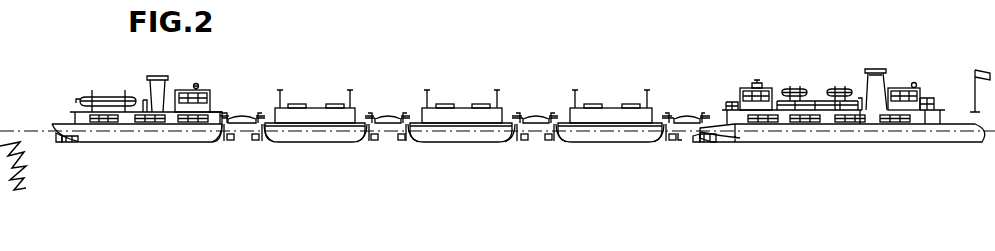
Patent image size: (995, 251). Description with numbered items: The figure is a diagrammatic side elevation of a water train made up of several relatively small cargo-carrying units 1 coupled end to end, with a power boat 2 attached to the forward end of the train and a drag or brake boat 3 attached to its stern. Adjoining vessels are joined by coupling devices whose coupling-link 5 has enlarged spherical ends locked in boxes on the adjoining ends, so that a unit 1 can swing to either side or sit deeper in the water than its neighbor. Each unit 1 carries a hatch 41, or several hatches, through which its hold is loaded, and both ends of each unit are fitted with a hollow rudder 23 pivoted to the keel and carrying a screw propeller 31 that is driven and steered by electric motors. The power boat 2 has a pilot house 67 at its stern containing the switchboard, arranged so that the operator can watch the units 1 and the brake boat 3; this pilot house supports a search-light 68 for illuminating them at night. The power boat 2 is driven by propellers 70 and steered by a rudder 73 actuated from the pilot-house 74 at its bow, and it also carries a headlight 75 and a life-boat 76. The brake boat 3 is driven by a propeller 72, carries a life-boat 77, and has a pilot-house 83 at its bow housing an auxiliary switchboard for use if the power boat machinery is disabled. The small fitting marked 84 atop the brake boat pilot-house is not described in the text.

The cargo-carrying unit 1 is at (320, 108).
The power boat 2 is at (878, 72).
The brake boat 3 is at (211, 112).
The coupling-link 5 is at (240, 118).
The rudder 23 is at (228, 137).
The screw propeller 31 is at (256, 140).
The hatch 41 is at (297, 104).
The pilot house 67 is at (766, 88).
The search-light 68 is at (755, 82).
The propeller 70 is at (712, 140).
The propeller 72 is at (72, 141).
The rudder 73 is at (58, 138).
The pilot-house 74 is at (919, 88).
The headlight 75 is at (914, 82).
The life-boat 76 is at (845, 89).
The life-boat 77 is at (115, 97).
The pilot-house 83 is at (197, 90).
The mast light 84 is at (197, 84).